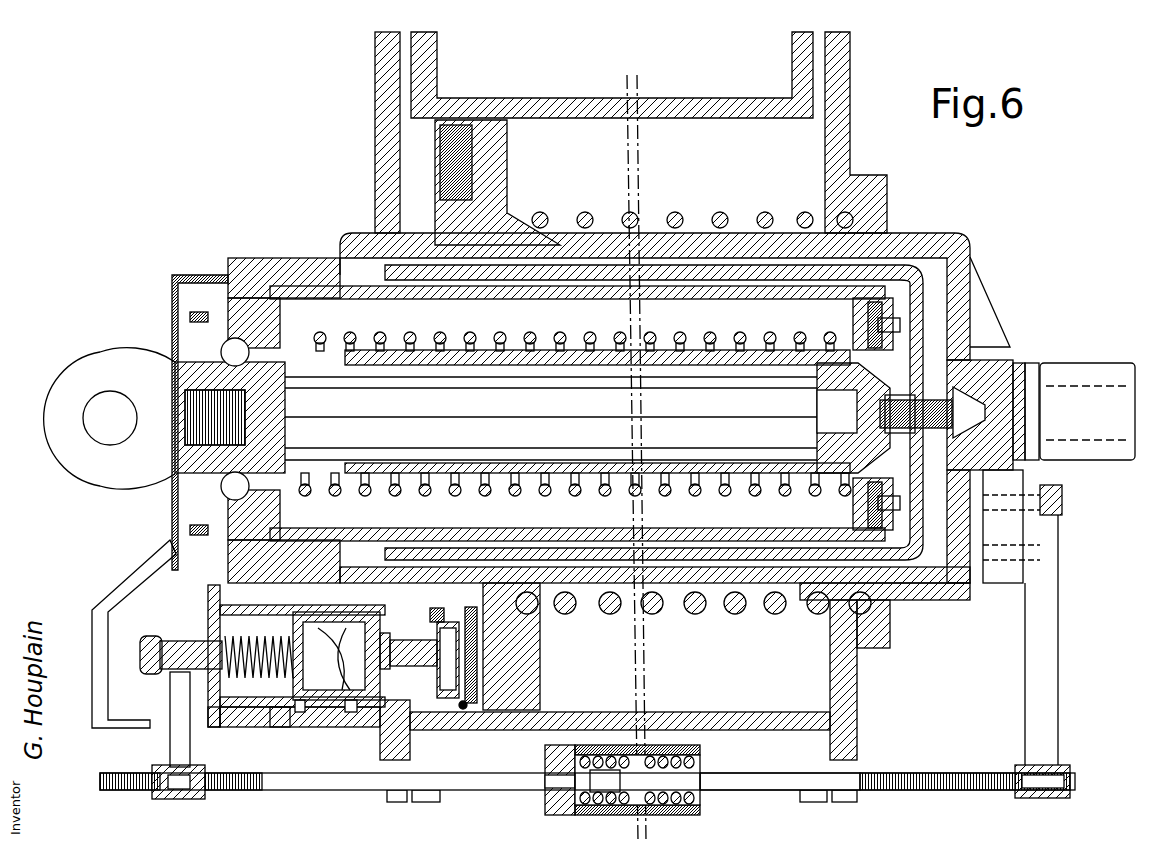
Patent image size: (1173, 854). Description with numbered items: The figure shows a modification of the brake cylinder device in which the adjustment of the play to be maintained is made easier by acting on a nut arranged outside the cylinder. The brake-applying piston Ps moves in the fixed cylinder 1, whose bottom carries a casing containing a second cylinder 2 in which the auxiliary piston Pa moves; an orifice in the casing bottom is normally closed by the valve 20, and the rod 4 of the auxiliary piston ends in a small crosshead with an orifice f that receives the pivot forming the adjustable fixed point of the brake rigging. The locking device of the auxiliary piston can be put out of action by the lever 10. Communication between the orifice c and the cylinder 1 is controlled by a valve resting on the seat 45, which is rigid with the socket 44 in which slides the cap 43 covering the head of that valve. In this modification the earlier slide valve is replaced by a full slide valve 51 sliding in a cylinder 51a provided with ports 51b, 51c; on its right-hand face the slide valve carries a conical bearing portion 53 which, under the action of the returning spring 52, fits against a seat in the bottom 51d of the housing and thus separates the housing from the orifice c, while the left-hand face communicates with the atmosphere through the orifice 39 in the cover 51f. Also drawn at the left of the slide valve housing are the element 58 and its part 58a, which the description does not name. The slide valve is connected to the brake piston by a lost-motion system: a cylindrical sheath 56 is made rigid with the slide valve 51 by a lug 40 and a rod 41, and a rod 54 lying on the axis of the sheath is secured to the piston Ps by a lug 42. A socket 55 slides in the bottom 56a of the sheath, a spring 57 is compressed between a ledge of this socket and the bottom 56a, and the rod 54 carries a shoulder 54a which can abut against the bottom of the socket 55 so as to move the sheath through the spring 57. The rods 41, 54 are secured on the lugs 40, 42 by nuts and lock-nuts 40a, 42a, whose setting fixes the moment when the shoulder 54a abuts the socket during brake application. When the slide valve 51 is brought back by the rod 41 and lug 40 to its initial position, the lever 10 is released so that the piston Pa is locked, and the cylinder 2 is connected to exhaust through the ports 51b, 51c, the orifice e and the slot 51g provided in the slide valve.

The cylinder 1 is at (588, 714).
The second cylinder 2 is at (527, 540).
The rod 4 is at (568, 445).
The lever 10 is at (168, 562).
The valve 20 is at (885, 410).
The orifice 39 is at (215, 690).
The lug 40 is at (172, 718).
The nuts and lock-nuts 40a is at (198, 800).
The rod 41 is at (362, 789).
The lug 42 is at (1025, 640).
The nuts and lock-nuts 42a is at (1042, 798).
The cap 43 is at (466, 665).
The socket 44 is at (448, 660).
The seat 45 is at (440, 620).
The slide valve 51 is at (330, 622).
The cylinder 51a is at (283, 728).
The port 51b is at (332, 659).
The port 51c is at (329, 659).
The bottom 51d is at (380, 742).
The cover 51f is at (222, 726).
The slot 51g is at (350, 714).
The returning spring 52 is at (255, 650).
The conical bearing portion 53 is at (385, 672).
The rod 54 is at (780, 787).
The shoulder 54a is at (590, 806).
The socket 55 is at (655, 806).
The cylindrical sheath 56 is at (622, 806).
The bottom 56a is at (656, 758).
The spring 57 is at (625, 753).
The push rod 58 is at (200, 643).
The push rod head 58a is at (152, 658).
The auxiliary piston Pa is at (856, 520).
The brake-applying piston Ps is at (493, 655).
The orifice c is at (455, 703).
The orifice e is at (300, 714).
The orifice f is at (109, 419).